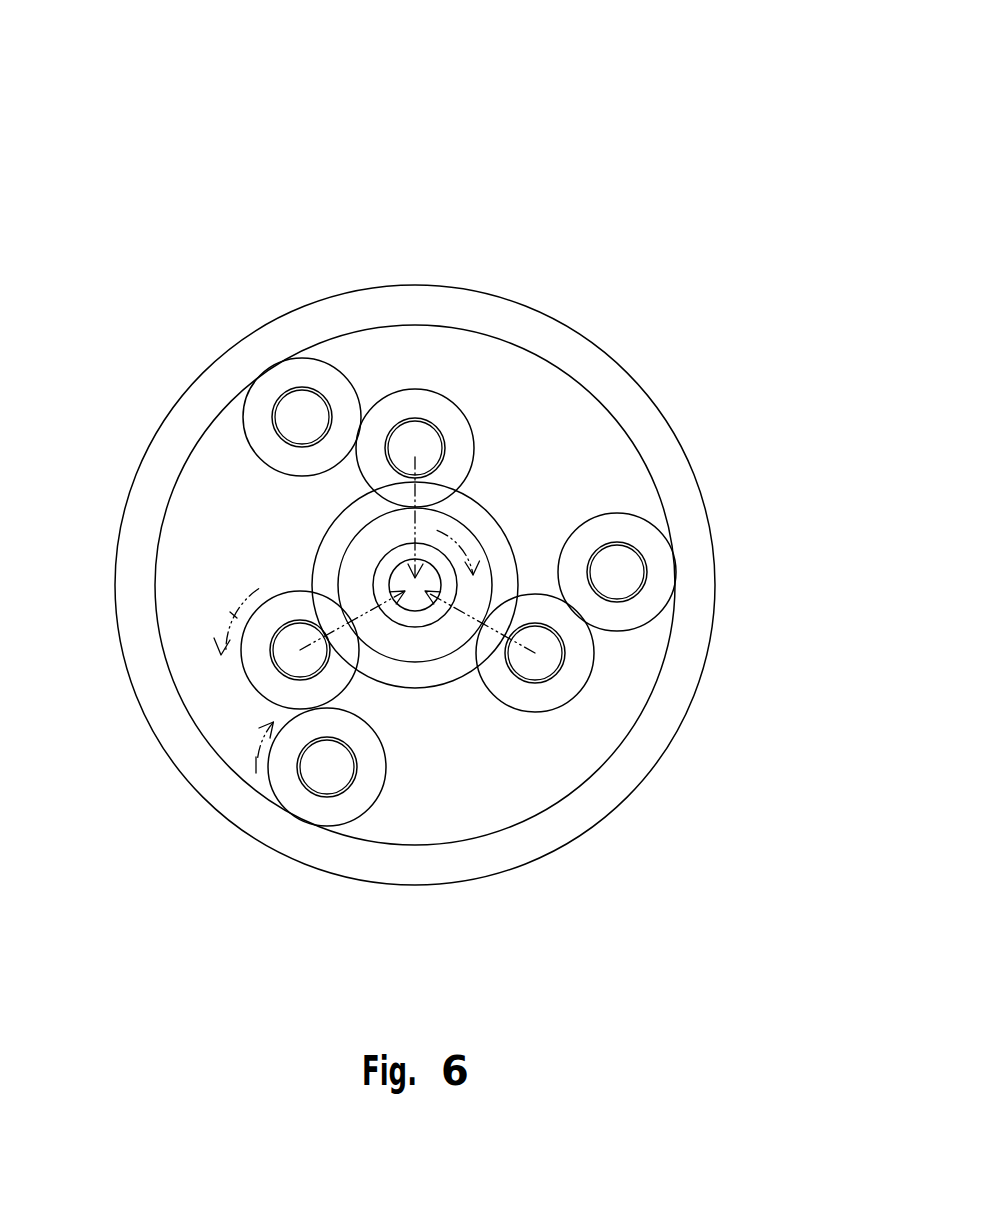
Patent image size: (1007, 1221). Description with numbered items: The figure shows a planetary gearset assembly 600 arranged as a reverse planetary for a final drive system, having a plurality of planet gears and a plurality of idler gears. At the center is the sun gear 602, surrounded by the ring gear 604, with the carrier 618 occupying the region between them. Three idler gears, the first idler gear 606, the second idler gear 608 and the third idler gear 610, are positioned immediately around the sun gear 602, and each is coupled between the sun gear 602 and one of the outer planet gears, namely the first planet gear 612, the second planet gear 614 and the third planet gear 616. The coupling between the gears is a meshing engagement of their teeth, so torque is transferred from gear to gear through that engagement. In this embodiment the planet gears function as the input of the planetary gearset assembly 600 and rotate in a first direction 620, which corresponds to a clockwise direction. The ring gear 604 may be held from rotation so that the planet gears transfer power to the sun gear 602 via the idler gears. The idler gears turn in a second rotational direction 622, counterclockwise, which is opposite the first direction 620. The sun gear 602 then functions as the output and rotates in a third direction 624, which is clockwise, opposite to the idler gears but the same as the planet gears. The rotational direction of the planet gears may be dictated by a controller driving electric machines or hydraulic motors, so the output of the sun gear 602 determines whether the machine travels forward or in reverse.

The planetary gearset assembly 600 is at (615, 133).
The sun gear 602 is at (415, 598).
The ring gear 604 is at (427, 302).
The first idler gear 606 is at (453, 420).
The second idler gear 608 is at (578, 670).
The third idler gear 610 is at (253, 675).
The first planet gear 612 is at (285, 377).
The second planet gear 614 is at (662, 570).
The third planet gear 616 is at (336, 807).
The carrier 618 is at (547, 780).
The first direction 620 is at (256, 757).
The second rotational direction 622 is at (233, 613).
The third direction 624 is at (462, 549).